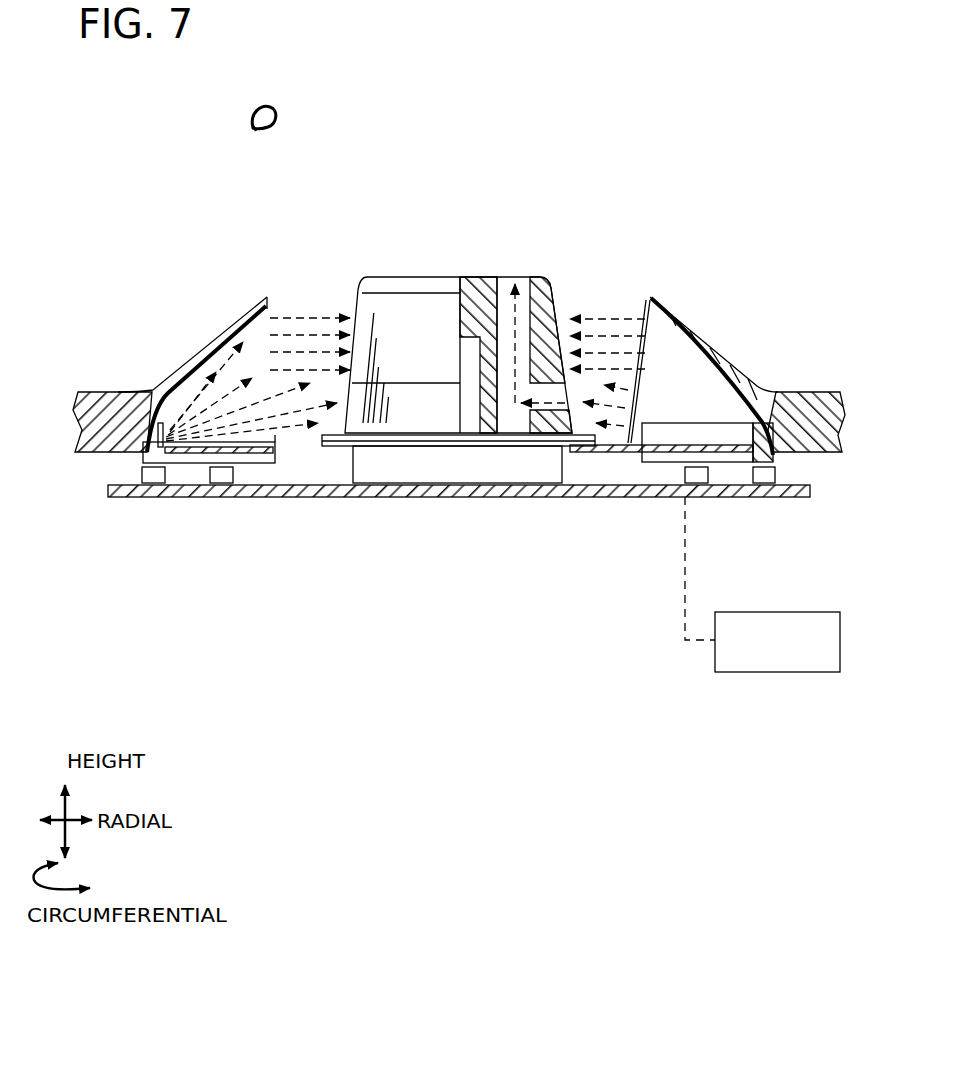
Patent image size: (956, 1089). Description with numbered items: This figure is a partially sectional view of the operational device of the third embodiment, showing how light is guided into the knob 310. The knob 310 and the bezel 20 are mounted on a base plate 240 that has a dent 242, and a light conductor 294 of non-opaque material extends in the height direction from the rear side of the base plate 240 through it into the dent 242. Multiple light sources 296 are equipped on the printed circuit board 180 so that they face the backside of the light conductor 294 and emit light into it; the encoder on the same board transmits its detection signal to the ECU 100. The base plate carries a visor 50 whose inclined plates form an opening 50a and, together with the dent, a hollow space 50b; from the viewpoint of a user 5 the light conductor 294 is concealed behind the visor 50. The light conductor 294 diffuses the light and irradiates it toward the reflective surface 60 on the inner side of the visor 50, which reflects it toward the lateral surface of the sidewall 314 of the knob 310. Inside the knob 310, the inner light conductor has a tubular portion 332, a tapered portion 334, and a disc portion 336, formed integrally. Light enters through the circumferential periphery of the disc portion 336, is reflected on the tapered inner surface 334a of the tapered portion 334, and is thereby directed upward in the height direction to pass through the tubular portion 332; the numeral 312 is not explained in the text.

The user 5 is at (250, 118).
The bezel 20 is at (332, 447).
The visor 50 is at (190, 335).
The opening 50a is at (618, 302).
The hollow space 50b is at (660, 383).
The reflective surface 60 is at (645, 300).
The ECU 100 is at (778, 612).
The printed circuit board 180 is at (127, 497).
The base plate 240 is at (118, 388).
The dent 242 is at (717, 403).
The light conductor 294 is at (773, 455).
The light sources 296 is at (695, 497).
The knob 310 is at (489, 262).
The sensor top portion 312 is at (437, 277).
The sidewall 314 is at (355, 307).
The tubular portion 332 is at (497, 332).
The tapered portion 334 is at (518, 400).
The tapered inner surface 334a is at (511, 405).
The disc portion 336 is at (537, 413).